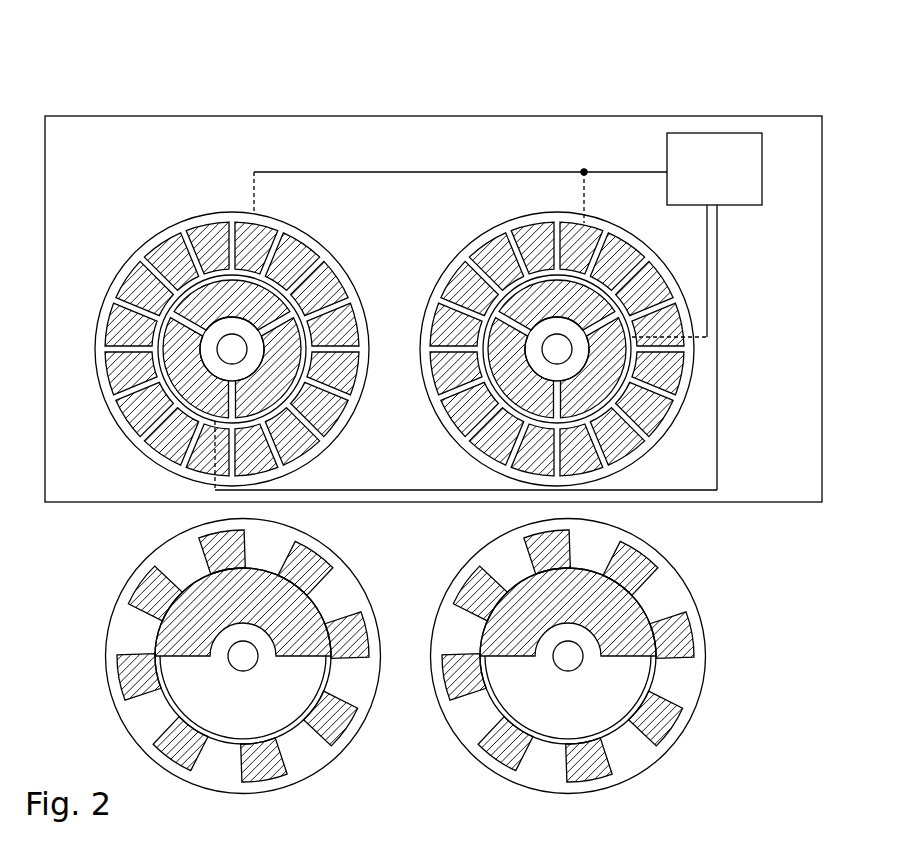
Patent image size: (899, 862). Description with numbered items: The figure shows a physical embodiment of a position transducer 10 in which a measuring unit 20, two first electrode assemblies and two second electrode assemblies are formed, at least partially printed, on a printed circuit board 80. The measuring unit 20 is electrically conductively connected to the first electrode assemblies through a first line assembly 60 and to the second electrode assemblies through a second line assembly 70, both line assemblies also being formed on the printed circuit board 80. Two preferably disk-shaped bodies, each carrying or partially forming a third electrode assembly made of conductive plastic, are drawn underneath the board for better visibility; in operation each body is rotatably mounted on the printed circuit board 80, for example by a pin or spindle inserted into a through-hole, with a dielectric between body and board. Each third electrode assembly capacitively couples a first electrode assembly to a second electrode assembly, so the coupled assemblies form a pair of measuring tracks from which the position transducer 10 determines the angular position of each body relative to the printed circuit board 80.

The position transducer 10 is at (780, 99).
The measuring unit 20 is at (762, 170).
The first line assembly 60 is at (409, 172).
The second line assembly 70 is at (730, 252).
The printed circuit board 80 is at (792, 503).